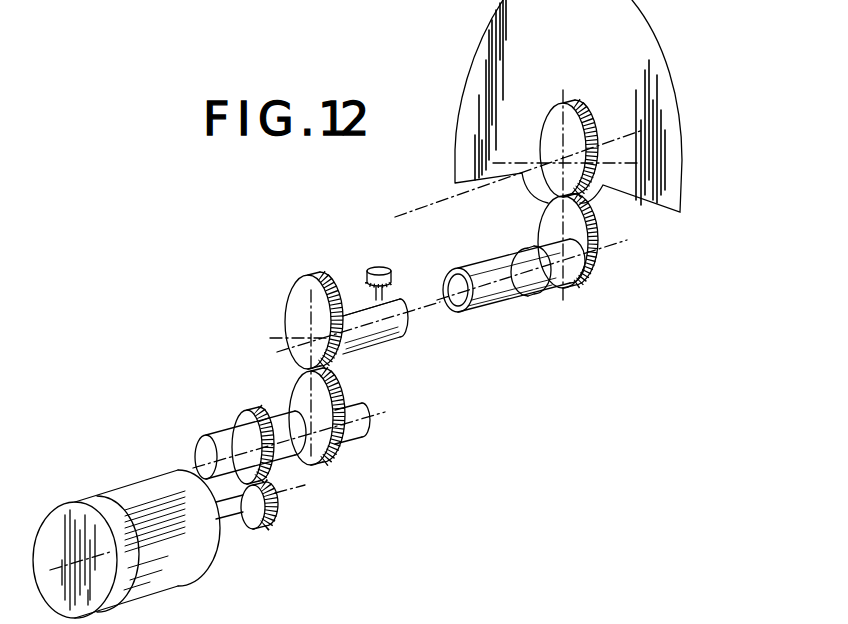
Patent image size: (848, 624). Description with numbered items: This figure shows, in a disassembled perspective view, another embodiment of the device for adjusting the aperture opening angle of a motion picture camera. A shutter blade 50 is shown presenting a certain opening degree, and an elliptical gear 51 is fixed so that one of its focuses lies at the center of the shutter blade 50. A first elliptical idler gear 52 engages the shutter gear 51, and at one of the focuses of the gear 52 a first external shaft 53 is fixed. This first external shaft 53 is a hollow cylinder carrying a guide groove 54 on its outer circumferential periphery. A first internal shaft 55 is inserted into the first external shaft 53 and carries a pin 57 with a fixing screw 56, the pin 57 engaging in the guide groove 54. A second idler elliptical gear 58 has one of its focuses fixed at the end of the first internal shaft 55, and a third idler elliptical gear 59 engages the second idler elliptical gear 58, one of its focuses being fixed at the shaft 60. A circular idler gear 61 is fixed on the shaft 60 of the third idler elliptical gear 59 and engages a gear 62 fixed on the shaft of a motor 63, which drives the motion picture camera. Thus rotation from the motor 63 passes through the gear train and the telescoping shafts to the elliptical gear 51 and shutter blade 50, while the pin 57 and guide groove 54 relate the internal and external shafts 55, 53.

The shutter blade 50 is at (485, 60).
The elliptical gear 51 is at (553, 127).
The first elliptical idler gear 52 is at (582, 235).
The first external shaft 53 is at (508, 290).
The guide groove 54 is at (533, 292).
The first internal shaft 55 is at (393, 325).
The fixing screw 56 is at (379, 270).
The pin 57 is at (397, 298).
The second idler elliptical gear 58 is at (322, 290).
The third idler elliptical gear 59 is at (328, 447).
The shaft 60 is at (360, 412).
The circular idler gear 61 is at (245, 420).
The gear 62 is at (273, 520).
The motor 63 is at (207, 563).